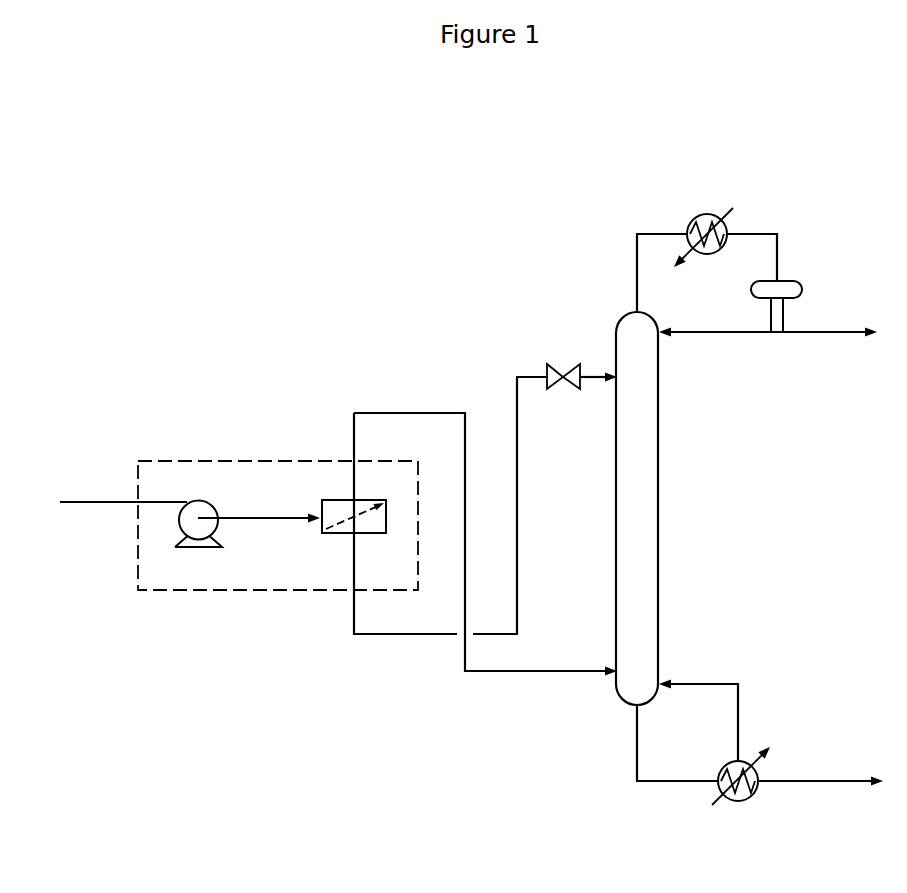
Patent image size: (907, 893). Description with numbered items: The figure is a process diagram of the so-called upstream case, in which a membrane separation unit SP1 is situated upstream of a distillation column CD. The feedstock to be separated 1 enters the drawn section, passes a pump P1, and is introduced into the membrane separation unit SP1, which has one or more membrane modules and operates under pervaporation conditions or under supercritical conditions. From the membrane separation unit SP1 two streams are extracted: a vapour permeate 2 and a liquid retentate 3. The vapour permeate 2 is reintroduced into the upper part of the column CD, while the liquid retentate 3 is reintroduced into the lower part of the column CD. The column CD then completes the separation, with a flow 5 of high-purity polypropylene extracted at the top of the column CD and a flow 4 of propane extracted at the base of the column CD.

The feedstock to be separated 1 is at (110, 500).
The vapour permeate 2 is at (414, 636).
The liquid retentate 3 is at (418, 412).
The flow of propane 4 is at (812, 780).
The flow of high-purity polypropylene 5 is at (827, 335).
The pump P1 is at (247, 540).
The membrane separation unit SP1 is at (343, 535).
The distillation column CD is at (659, 509).